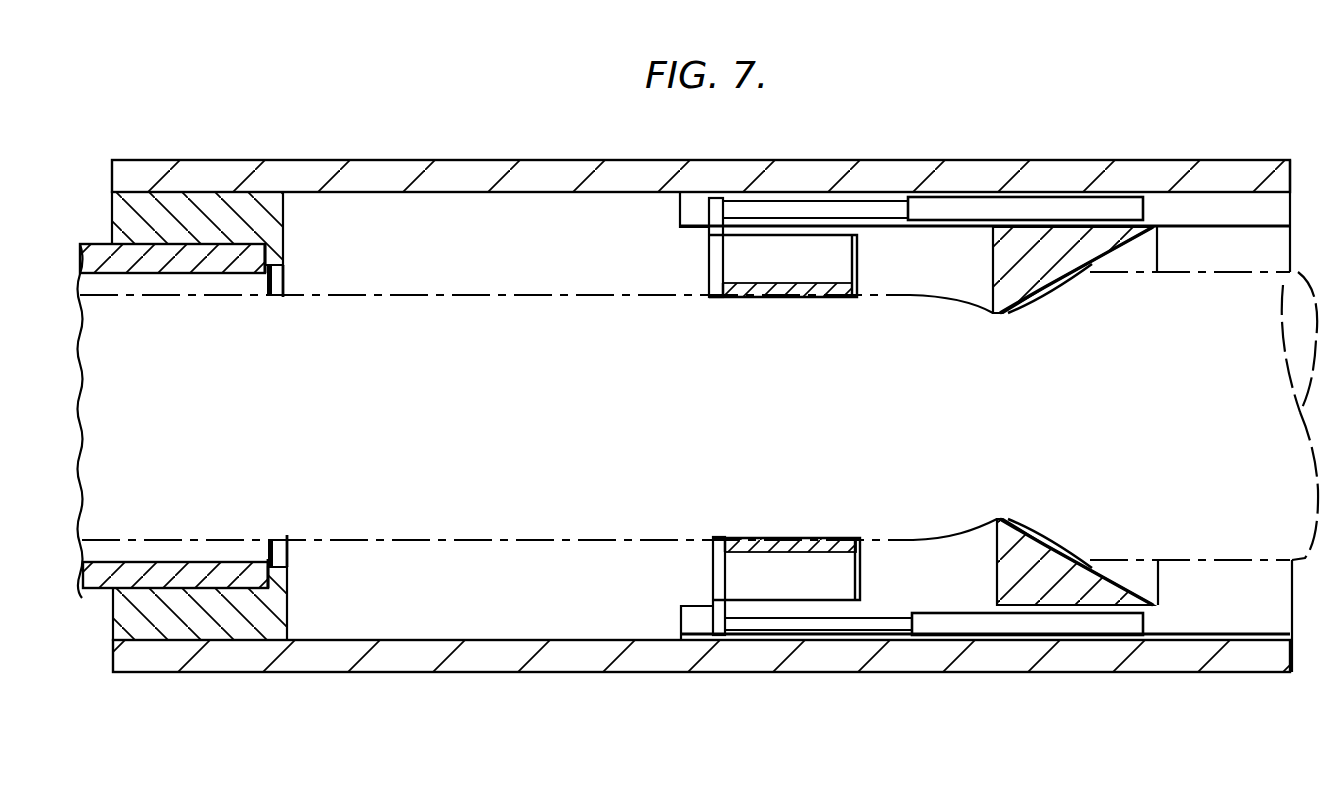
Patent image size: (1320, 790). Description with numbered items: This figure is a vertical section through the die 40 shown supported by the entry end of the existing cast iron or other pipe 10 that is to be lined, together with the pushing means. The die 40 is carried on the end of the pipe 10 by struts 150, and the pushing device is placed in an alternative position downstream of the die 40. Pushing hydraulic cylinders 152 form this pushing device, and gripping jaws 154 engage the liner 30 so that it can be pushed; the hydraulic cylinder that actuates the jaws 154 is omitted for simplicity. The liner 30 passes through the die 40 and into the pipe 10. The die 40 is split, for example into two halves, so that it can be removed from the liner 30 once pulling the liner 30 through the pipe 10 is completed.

The pipe 10 is at (185, 265).
The liner 30 is at (471, 295).
The die 40 is at (1063, 245).
The struts 150 is at (466, 172).
The pushing hydraulic cylinders 152 is at (943, 203).
The gripping jaws 154 is at (748, 268).